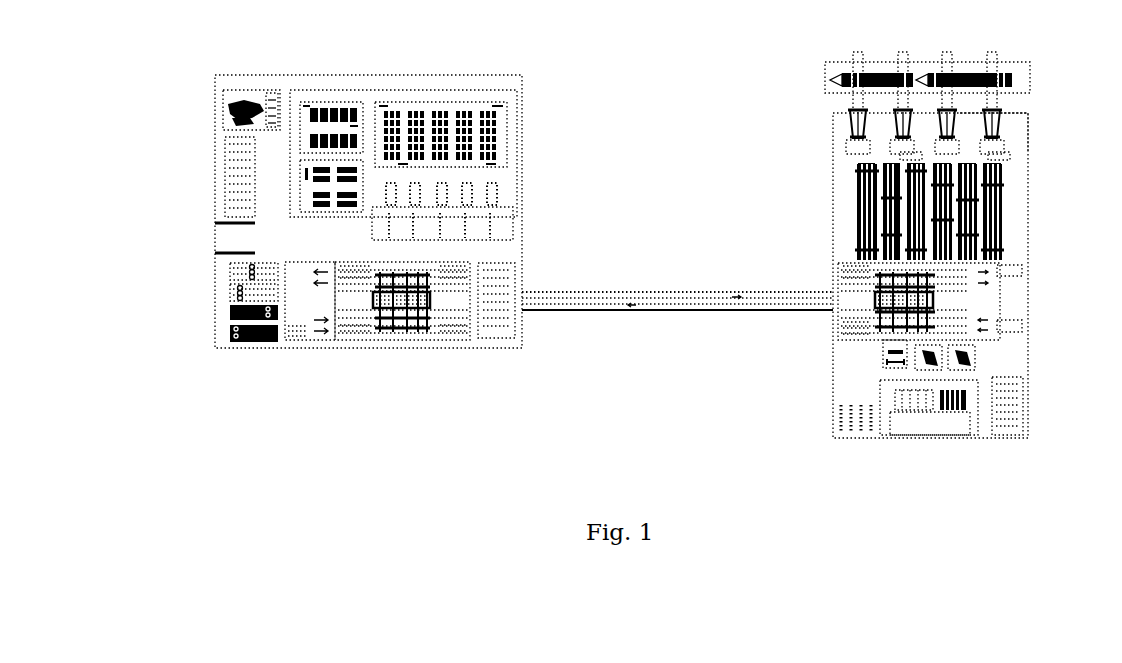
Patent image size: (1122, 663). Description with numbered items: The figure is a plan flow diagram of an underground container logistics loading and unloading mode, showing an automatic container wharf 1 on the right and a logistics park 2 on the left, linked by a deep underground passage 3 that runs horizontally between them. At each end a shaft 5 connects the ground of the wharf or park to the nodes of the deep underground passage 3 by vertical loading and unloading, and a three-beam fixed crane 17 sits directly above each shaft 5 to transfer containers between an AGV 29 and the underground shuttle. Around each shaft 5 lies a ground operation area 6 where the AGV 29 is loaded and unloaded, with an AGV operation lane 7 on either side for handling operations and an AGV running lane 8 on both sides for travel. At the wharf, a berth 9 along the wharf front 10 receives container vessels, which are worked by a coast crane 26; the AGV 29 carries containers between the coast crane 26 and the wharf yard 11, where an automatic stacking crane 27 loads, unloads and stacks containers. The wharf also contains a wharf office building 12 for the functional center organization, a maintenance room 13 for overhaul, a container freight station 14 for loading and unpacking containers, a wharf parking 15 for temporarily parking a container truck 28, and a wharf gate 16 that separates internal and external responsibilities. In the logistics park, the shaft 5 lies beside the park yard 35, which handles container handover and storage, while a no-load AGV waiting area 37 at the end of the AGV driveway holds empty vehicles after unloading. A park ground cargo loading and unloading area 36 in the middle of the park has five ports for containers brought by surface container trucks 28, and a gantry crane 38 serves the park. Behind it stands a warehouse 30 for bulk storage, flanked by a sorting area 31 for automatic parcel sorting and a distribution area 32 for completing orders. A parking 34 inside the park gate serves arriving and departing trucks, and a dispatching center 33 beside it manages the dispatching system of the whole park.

The automatic container wharf 1 is at (1030, 222).
The logistics park 2 is at (524, 258).
The deep underground passage 3 is at (690, 308).
The shaft 5 is at (378, 335).
The ground operation area 6 is at (323, 320).
The AGV operation lane 7 is at (470, 335).
The AGV running lane 8 is at (430, 325).
The berth 9 is at (1018, 82).
The wharf front 10 is at (1028, 130).
The wharf yard 11 is at (850, 216).
The wharf office building 12 is at (976, 358).
The maintenance room 13 is at (885, 350).
The container freight station 14 is at (975, 430).
The wharf parking 15 is at (1025, 405).
The wharf gate 16 is at (838, 427).
The three-beam fixed crane 17 is at (402, 333).
The coast crane 26 is at (1000, 114).
The automatic stacking crane 27 is at (858, 166).
The container truck 28 is at (226, 168).
The AGV 29 is at (298, 336).
The warehouse 30 is at (420, 107).
The sorting area 31 is at (325, 95).
The distribution area 32 is at (356, 108).
The dispatching center 33 is at (226, 94).
The parking 34 is at (222, 128).
The park yard 35 is at (230, 280).
The park ground cargo loading and unloading area 36 is at (513, 228).
The no-load AGV waiting area 37 is at (520, 340).
The gantry crane 38 is at (230, 322).